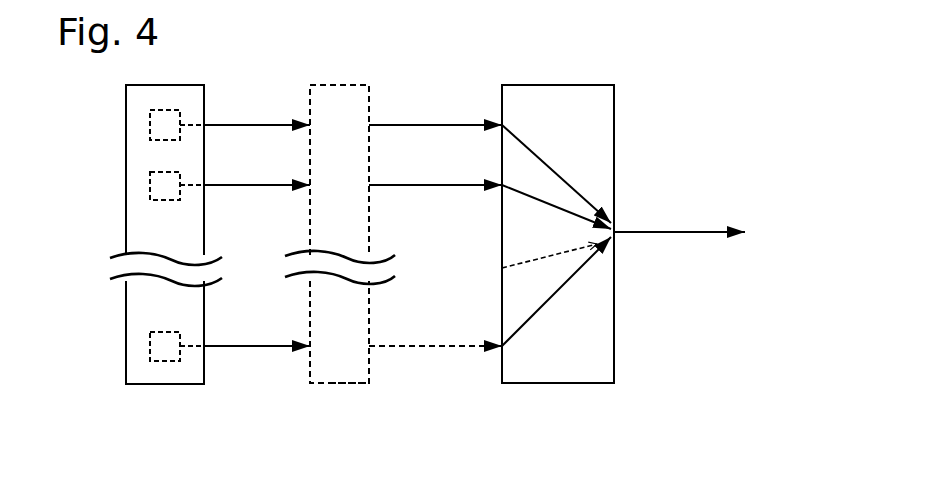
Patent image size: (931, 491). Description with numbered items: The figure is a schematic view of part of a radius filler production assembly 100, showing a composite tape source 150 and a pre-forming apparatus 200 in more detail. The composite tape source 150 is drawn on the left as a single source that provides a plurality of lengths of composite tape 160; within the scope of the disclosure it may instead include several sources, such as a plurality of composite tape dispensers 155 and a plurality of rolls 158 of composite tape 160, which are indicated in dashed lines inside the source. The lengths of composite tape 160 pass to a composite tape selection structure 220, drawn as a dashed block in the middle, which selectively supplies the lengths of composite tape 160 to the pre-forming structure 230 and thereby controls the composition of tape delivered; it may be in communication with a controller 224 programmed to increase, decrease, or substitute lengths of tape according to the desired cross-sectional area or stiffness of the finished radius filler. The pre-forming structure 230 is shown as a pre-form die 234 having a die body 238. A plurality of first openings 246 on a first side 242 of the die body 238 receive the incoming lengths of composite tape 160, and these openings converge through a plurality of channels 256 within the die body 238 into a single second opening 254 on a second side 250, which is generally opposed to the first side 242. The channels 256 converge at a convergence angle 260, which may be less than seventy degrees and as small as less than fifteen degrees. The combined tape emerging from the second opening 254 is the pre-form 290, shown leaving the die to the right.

The radius filler production assembly 100 is at (717, 71).
The composite tape source 150 is at (160, 389).
The composite tape dispensers 155 is at (149, 136).
The rolls of composite tape 158 is at (150, 114).
The lengths of composite tape 160 is at (259, 126).
The pre-forming apparatus 200 is at (446, 436).
The composite tape selection structure 220 is at (330, 386).
The controller 224 is at (350, 382).
The pre-forming structure 230 is at (532, 387).
The pre-form die 234 is at (565, 385).
The die body 238 is at (600, 358).
The first side 242 is at (502, 98).
The first openings 246 is at (497, 128).
The second side 250 is at (614, 97).
The second opening 254 is at (620, 240).
The channels 256 is at (540, 311).
The convergence angle 260 is at (577, 263).
The pre-form 290 is at (701, 238).